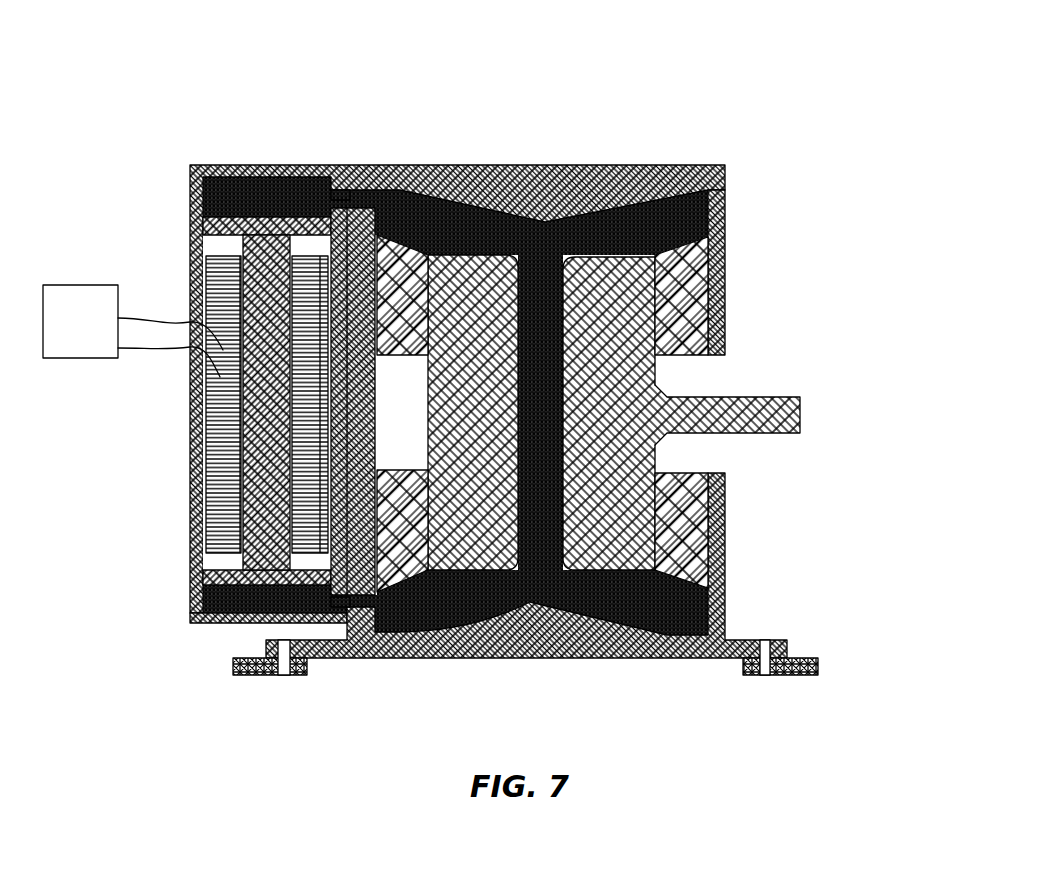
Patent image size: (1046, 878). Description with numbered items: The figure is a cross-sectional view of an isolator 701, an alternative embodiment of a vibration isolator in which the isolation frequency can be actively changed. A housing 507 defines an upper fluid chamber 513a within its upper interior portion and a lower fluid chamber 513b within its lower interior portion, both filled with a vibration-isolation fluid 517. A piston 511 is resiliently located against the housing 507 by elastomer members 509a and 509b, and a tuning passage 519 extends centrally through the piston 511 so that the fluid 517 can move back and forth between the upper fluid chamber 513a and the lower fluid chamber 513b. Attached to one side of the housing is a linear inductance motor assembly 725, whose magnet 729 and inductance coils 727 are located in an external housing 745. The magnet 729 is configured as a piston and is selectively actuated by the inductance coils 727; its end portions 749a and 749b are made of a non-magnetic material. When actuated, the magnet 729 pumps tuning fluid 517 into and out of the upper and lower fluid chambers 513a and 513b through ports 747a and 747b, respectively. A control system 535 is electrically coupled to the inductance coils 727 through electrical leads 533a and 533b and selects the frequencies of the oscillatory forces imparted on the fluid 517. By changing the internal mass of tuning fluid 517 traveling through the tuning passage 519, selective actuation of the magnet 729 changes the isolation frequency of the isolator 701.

The isolator 701 is at (286, 62).
The linear inductance motor assembly 725 is at (158, 196).
The housing 507 is at (527, 168).
The tuning passage 519 is at (706, 318).
The external housing 745 is at (222, 612).
The upper fluid chamber 513a is at (648, 207).
The lower fluid chamber 513b is at (457, 593).
The vibration-isolation fluid 517 is at (537, 577).
The piston end portion 749a is at (215, 227).
The piston end portion 749b is at (228, 592).
The magnet 729 is at (265, 482).
The inductance coils 727 is at (225, 528).
The port 747a is at (347, 195).
The port 747b is at (327, 607).
The elastomer member 509a is at (680, 297).
The elastomer member 509b is at (682, 532).
The piston 511 is at (773, 397).
The control system 535 is at (99, 335).
The electrical lead 533a is at (162, 317).
The electrical lead 533b is at (167, 350).